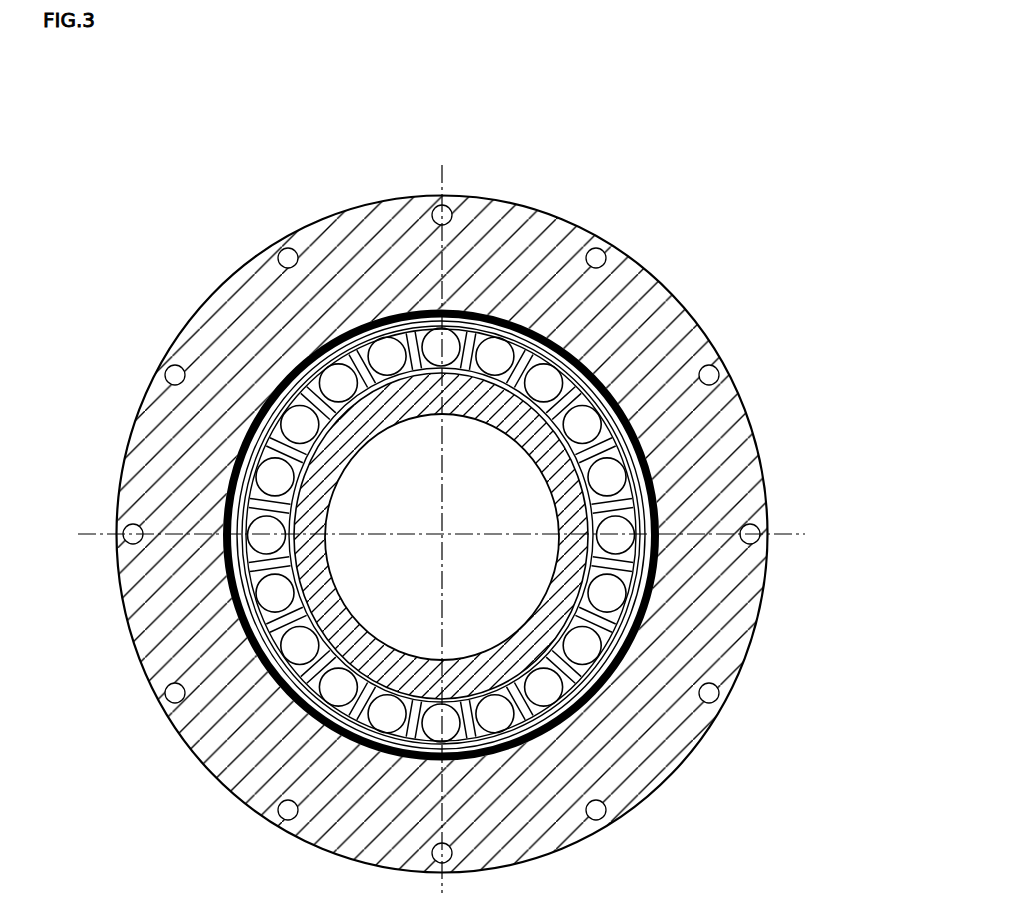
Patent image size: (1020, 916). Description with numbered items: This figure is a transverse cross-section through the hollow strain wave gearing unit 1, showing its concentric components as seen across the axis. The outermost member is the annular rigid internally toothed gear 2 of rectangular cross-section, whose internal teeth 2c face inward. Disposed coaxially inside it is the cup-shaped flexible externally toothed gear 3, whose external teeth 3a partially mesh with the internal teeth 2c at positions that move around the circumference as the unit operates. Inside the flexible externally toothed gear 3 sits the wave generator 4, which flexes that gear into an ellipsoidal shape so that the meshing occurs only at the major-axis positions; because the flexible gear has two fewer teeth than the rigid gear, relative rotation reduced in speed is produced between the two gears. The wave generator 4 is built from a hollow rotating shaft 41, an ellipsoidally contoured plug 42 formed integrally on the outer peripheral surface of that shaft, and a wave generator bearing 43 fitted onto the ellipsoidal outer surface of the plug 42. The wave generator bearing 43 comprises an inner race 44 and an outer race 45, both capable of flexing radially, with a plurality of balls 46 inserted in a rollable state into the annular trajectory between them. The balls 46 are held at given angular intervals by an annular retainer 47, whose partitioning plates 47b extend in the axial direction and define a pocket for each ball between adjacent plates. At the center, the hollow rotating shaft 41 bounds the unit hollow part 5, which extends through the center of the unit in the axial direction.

The hollow strain wave gearing unit 1 is at (637, 211).
The rigid internally toothed gear 2 is at (652, 326).
The internal teeth 2c is at (637, 420).
The flexible externally toothed gear 3 is at (647, 470).
The external teeth 3a is at (650, 440).
The wave generator 4 is at (74, 298).
The hollow rotating shaft 41 is at (230, 490).
The plug 42 is at (242, 447).
The wave generator bearing 43 is at (292, 425).
The inner race 44 is at (298, 686).
The outer race 45 is at (290, 665).
The balls 46 is at (268, 593).
The retainer 47 is at (247, 567).
The partitioning plates 47b is at (272, 630).
The unit hollow part 5 is at (420, 491).